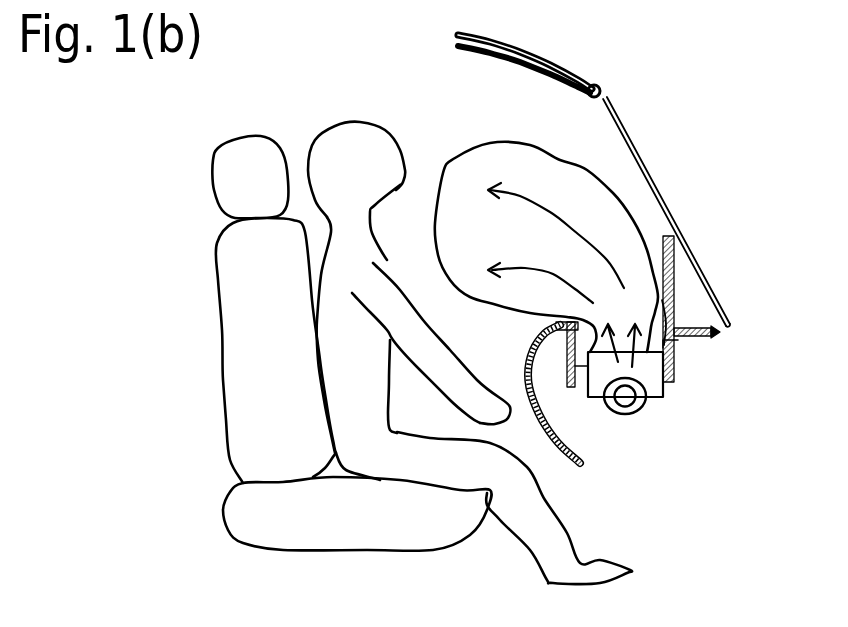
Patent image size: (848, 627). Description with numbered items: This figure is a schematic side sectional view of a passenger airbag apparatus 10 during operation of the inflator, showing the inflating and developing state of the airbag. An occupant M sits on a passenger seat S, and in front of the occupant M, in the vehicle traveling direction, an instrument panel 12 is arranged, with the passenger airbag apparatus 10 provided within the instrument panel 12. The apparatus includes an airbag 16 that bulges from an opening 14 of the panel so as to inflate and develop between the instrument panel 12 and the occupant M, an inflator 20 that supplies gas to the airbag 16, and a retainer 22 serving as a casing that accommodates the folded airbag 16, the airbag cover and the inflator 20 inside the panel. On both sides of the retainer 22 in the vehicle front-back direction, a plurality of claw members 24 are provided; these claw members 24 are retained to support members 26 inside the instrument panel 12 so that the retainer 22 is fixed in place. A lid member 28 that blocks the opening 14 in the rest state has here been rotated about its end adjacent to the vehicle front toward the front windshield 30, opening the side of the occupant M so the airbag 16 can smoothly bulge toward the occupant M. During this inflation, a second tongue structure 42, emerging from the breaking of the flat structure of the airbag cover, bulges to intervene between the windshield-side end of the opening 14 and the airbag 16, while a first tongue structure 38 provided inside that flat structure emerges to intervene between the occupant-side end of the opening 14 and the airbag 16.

The passenger airbag apparatus 10 is at (677, 467).
The instrument panel 12 is at (525, 340).
The opening 14 is at (685, 348).
The airbag 16 is at (587, 172).
The inflator 20 is at (612, 397).
The retainer 22 is at (652, 408).
The claw members 24 is at (528, 365).
The support members 26 is at (573, 390).
The lid member 28 is at (675, 270).
The front windshield 30 is at (664, 199).
The first tongue structure 38 is at (520, 319).
The second tongue structure 42 is at (678, 309).
The occupant M is at (320, 143).
The passenger seat S is at (335, 540).